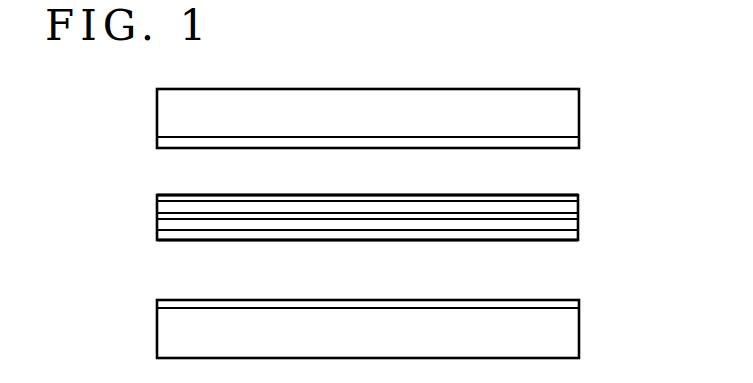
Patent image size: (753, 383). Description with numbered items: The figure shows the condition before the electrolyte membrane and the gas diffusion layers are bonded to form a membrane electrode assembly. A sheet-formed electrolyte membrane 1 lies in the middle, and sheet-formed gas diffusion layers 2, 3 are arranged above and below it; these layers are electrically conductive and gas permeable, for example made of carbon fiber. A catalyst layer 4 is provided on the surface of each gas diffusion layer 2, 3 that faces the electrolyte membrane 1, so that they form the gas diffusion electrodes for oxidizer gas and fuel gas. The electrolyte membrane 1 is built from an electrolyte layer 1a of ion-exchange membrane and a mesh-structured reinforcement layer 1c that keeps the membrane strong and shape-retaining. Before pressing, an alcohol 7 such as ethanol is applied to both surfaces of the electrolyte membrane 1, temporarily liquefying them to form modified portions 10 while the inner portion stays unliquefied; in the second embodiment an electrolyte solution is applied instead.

The electrolyte membrane 1 is at (149, 226).
The electrolyte layer 1a is at (578, 206).
The reinforcement layer 1c is at (579, 217).
The gas diffusion layer 2 is at (149, 122).
The gas diffusion layer 3 is at (149, 343).
The catalyst layer 4 is at (442, 139).
The alcohol 7 is at (577, 196).
The modified portion 10 is at (324, 195).